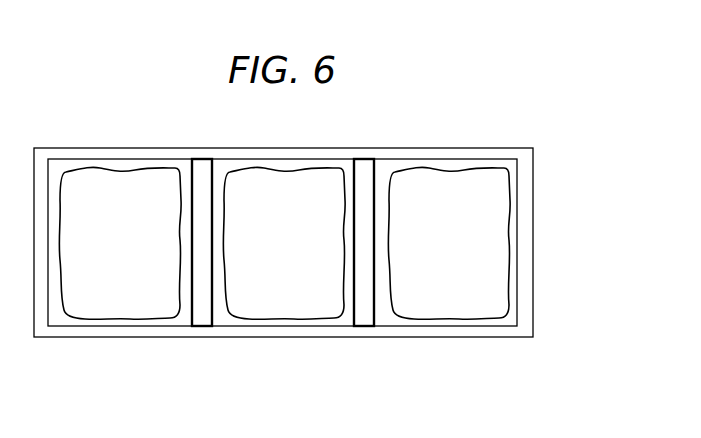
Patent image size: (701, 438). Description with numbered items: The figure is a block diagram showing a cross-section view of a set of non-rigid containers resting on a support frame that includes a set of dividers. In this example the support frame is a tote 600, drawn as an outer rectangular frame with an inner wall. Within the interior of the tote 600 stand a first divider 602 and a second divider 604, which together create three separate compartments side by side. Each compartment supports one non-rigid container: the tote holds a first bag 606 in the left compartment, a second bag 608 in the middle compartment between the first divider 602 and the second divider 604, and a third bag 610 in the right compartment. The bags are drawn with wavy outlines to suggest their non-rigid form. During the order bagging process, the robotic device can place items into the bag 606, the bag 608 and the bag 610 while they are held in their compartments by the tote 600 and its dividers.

The tote 600 is at (536, 231).
The first divider 602 is at (198, 325).
The second divider 604 is at (362, 325).
The first bag 606 is at (116, 164).
The second bag 608 is at (280, 164).
The third bag 610 is at (428, 164).